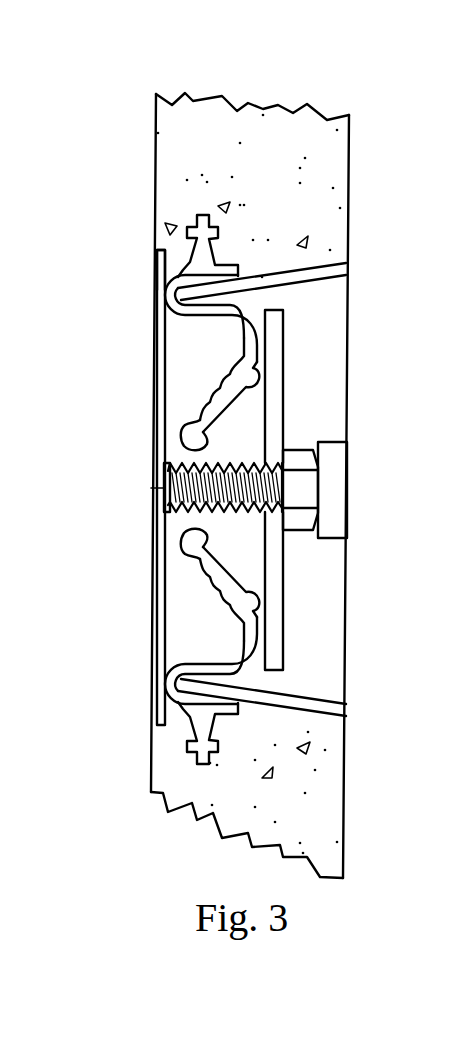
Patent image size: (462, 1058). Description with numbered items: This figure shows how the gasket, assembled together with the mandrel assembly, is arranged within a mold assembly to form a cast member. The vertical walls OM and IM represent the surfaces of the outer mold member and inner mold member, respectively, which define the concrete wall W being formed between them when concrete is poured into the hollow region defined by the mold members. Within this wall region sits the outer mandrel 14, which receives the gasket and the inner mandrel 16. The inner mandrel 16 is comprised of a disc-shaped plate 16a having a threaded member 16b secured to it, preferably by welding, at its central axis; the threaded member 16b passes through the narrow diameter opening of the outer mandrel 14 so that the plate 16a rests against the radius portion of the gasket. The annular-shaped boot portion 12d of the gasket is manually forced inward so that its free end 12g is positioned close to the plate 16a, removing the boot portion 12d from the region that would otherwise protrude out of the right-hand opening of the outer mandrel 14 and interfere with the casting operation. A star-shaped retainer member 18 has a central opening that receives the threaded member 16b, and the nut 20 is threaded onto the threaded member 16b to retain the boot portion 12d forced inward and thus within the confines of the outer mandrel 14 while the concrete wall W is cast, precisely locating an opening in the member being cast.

The concrete wall W is at (334, 98).
The inner mold member surface IM is at (150, 752).
The outer mold member surface OM is at (343, 757).
The outer mandrel 14 is at (318, 303).
The boot portion 12d is at (238, 338).
The free end of boot portion 12g is at (186, 425).
The inner mandrel 16 is at (128, 304).
The disc-shaped plate 16a is at (153, 278).
The threaded member 16b is at (233, 514).
The star-shaped retainer member 18 is at (295, 352).
The nut 20 is at (302, 449).